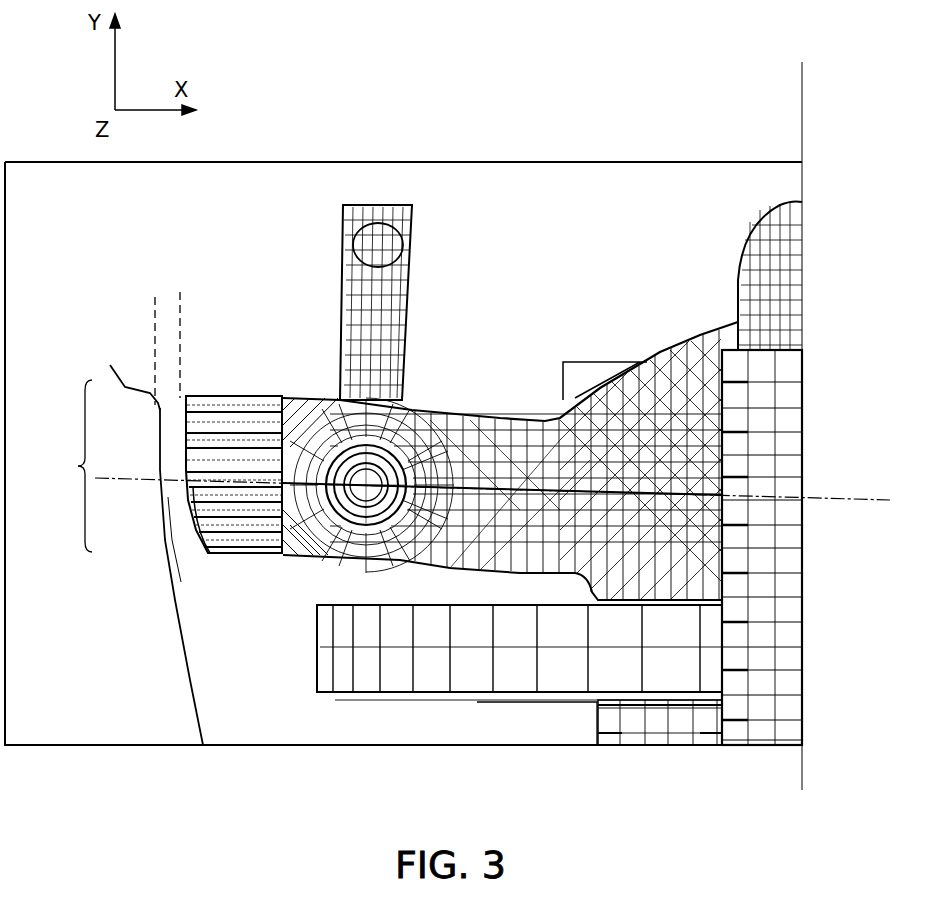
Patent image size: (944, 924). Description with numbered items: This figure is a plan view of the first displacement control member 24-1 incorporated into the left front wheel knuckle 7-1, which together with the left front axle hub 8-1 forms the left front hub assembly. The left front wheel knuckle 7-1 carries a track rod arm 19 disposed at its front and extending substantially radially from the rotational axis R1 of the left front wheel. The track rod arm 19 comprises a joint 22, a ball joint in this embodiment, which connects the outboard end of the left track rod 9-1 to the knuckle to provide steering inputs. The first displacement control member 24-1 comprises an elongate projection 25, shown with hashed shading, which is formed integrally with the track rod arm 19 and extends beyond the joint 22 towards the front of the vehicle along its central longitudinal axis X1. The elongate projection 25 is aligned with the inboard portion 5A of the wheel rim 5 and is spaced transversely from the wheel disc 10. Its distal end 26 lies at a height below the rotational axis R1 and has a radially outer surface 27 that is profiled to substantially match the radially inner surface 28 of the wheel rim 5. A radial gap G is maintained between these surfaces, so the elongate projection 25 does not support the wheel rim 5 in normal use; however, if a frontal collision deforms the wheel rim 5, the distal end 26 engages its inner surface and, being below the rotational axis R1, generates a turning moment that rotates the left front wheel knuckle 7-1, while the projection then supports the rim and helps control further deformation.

The wheel rim 5 is at (180, 662).
The inboard portion 5A is at (62, 466).
The radially outer surface 27 is at (143, 382).
The radially inner surface 28 is at (175, 548).
The elongate projection 25 is at (246, 396).
The distal end 26 is at (200, 530).
The first displacement control member 24-1 is at (214, 374).
The joint 22 is at (414, 432).
The track rod arm 19 is at (497, 420).
The left track rod 9-1 is at (408, 290).
The left front wheel knuckle 7-1 is at (738, 292).
The wheel disc 10 is at (478, 688).
The left front axle hub 8-1 is at (690, 742).
The radial gap G is at (167, 340).
The central longitudinal axis X1 is at (492, 474).
The rotational axis R1 is at (819, 426).